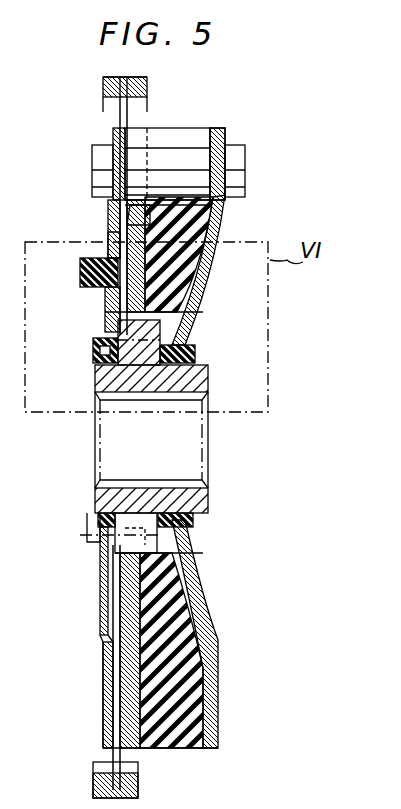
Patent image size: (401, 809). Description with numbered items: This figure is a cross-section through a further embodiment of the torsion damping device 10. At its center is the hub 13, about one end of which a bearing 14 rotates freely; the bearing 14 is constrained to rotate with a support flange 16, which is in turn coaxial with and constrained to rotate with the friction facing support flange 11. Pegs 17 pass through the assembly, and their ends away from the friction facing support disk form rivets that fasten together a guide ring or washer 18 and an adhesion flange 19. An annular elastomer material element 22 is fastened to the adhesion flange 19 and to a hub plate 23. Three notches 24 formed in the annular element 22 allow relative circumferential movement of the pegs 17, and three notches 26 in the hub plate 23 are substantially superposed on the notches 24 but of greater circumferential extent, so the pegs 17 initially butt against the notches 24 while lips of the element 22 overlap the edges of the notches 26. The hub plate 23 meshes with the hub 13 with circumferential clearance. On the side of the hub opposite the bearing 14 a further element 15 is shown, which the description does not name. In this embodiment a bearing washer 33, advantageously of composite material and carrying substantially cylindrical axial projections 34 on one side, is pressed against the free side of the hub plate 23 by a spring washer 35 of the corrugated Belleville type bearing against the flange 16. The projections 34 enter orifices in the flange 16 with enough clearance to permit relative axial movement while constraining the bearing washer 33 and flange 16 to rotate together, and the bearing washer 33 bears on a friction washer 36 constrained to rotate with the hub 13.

The device 10 is at (272, 144).
The friction facing support flange 11 is at (114, 106).
The hub 13 is at (211, 500).
The bearing 14 is at (91, 360).
The seal 15 is at (198, 359).
The support flange 16 is at (110, 136).
The pegs 17 is at (197, 171).
The guide ring or washer 18 is at (229, 126).
The adhesion flange 19 is at (212, 126).
The annular elastomer material element 22 is at (181, 126).
The hub plate 23 is at (119, 216).
The notches 24 is at (223, 201).
The notches 26 is at (134, 206).
The bearing washer 33 is at (108, 242).
The axial projections 34 is at (82, 285).
The spring washer 35 is at (104, 303).
The friction washer 36 is at (131, 272).